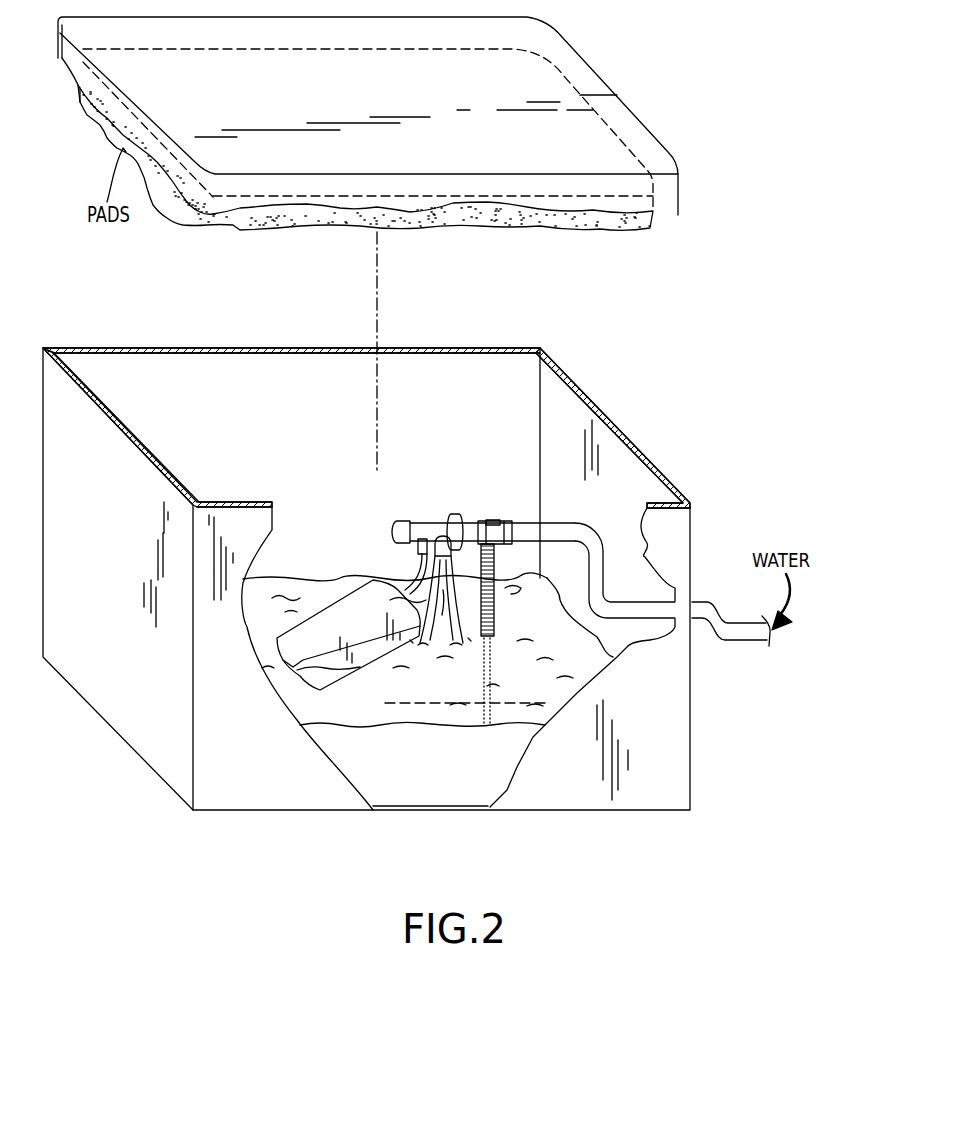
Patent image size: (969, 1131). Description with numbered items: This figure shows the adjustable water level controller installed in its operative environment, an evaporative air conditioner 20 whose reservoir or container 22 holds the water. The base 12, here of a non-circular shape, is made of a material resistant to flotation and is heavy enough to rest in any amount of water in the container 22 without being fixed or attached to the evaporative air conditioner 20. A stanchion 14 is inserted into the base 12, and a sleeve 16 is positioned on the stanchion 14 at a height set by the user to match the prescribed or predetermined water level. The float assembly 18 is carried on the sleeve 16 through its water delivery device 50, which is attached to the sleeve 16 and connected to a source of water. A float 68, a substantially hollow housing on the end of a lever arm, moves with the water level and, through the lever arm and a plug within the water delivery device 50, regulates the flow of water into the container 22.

The base 12 is at (438, 748).
The stanchion 14 is at (505, 610).
The sleeve 16 is at (496, 533).
The float assembly 18 is at (398, 557).
The evaporative air conditioner 20 is at (650, 125).
The container 22 is at (682, 650).
The water delivery device 50 is at (496, 523).
The float 68 is at (342, 607).